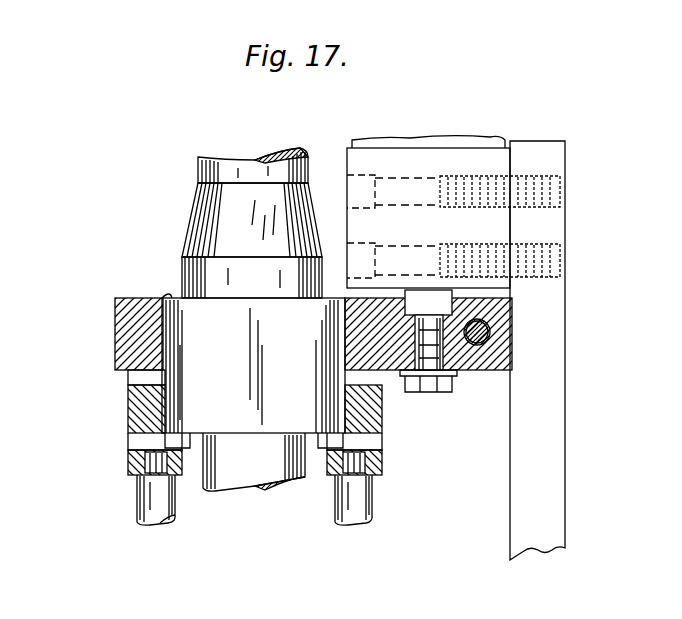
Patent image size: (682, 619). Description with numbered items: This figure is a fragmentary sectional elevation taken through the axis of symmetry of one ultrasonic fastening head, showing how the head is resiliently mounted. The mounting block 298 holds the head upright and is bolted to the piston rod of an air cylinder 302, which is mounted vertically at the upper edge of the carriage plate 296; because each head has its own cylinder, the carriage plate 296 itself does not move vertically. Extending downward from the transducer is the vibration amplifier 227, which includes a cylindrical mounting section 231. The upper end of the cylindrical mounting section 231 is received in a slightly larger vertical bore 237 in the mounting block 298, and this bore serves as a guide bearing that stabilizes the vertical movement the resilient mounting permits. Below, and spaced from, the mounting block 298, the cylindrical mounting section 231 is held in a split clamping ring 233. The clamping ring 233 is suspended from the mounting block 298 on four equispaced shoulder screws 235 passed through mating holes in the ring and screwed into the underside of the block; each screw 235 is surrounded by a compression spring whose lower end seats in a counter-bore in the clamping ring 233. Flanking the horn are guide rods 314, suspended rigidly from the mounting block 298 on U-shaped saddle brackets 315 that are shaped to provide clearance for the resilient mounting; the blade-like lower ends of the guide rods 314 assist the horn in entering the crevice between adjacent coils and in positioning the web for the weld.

The vibration amplifier 227 is at (218, 212).
The vertical bore 237 is at (170, 298).
The cylindrical mounting section 231 is at (250, 366).
The mounting block 298 is at (114, 318).
The split clamping ring 233 is at (127, 396).
The U-shaped saddle bracket 315 is at (138, 447).
The guide rod 314 is at (140, 505).
The shoulder screw 235 is at (368, 440).
The air cylinder 302 is at (488, 140).
The carriage plate 296 is at (557, 440).